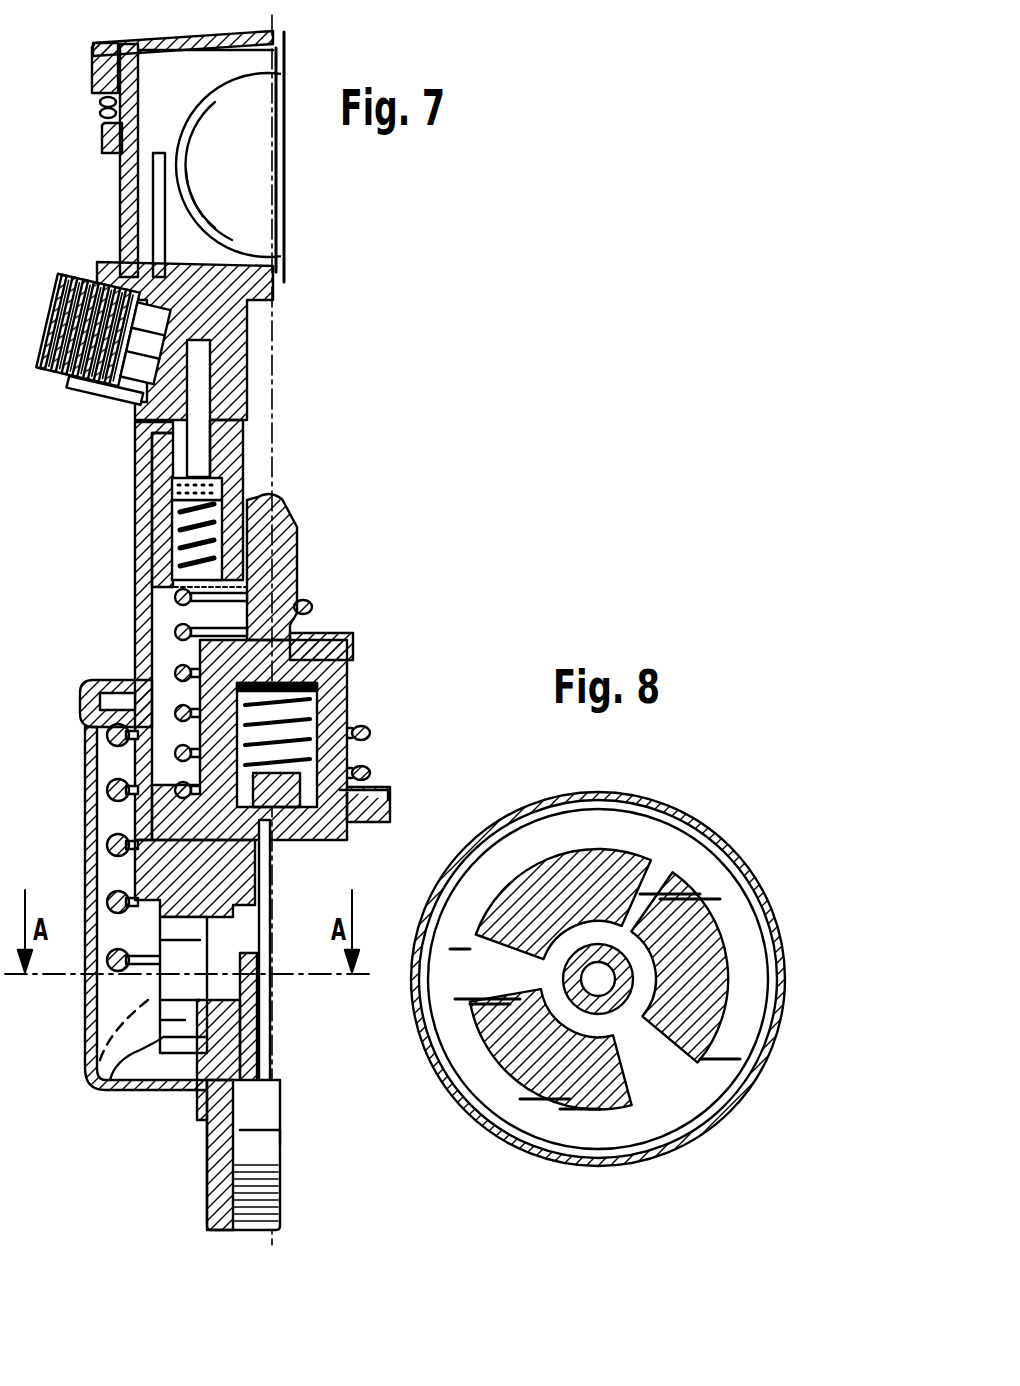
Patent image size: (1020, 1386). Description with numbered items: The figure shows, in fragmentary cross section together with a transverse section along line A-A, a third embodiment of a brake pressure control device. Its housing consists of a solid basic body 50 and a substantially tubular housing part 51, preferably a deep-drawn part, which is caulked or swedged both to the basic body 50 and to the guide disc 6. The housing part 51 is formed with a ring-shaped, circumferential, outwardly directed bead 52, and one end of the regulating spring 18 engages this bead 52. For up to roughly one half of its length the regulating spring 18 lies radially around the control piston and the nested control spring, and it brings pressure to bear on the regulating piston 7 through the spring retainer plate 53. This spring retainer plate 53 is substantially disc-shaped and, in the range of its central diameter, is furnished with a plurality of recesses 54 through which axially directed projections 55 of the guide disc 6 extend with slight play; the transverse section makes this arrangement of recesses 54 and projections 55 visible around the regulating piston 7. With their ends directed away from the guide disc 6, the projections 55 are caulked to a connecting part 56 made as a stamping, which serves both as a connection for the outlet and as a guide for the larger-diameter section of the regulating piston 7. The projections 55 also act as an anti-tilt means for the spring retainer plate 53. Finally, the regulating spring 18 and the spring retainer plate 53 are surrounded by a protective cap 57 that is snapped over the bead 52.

In FIG. 7, the basic body 50 is at (223, 358).
In FIG. 7, the housing part 51 is at (140, 505).
In FIG. 7, the bead 52 is at (150, 710).
In FIG. 7, the regulating spring 18 is at (103, 787).
In FIG. 7, the protective cap 57 is at (88, 835).
In FIG. 7, the guide disc 6 is at (253, 882).
In FIG. 7, the spring retainer plate 53 is at (140, 990).
In FIG. 8, the spring retainer plate 53 is at (507, 860).
In FIG. 7, the recesses 54 is at (100, 1060).
In FIG. 8, the recesses 54 is at (570, 848).
In FIG. 7, the projections 55 is at (163, 1037).
In FIG. 8, the projections 55 is at (493, 1057).
In FIG. 7, the regulating piston 7 is at (257, 1057).
In FIG. 8, the regulating piston 7 is at (610, 1012).
In FIG. 7, the connecting part 56 is at (208, 1137).